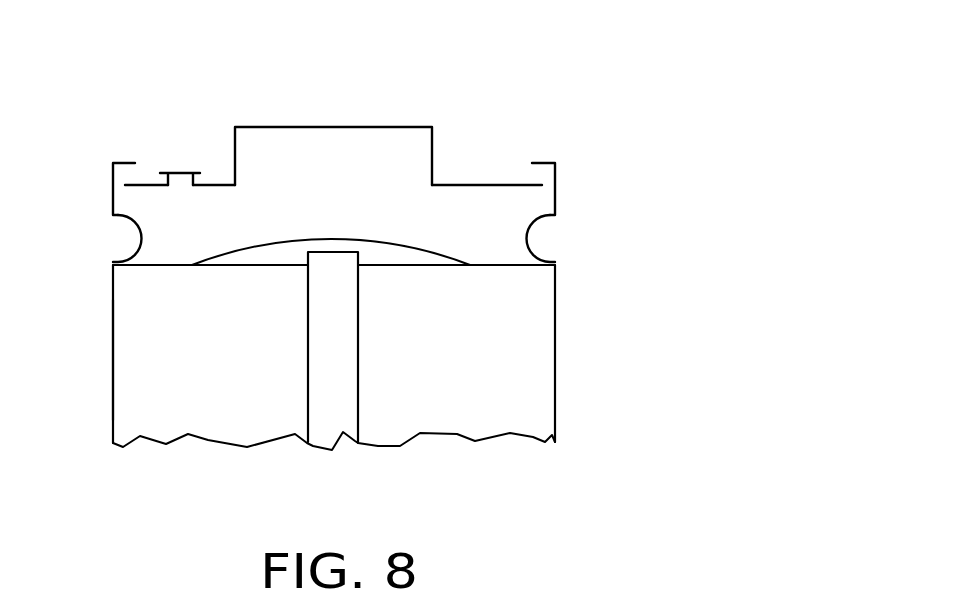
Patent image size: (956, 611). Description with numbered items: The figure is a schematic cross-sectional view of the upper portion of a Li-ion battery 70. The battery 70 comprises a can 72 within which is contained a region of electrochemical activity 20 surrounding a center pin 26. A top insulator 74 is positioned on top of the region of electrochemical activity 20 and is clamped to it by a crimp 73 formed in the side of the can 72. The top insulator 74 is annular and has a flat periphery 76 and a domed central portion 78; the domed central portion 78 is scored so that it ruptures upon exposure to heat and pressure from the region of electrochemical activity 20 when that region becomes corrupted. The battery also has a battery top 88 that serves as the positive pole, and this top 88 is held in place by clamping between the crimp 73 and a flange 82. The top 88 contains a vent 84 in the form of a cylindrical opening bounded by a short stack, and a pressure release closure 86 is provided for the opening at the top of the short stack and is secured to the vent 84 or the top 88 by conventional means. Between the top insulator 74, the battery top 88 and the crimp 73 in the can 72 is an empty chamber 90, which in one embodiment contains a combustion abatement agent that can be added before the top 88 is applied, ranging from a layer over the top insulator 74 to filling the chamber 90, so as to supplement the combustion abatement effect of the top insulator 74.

The Li-ion battery 70 is at (582, 101).
The can 72 is at (556, 355).
The region of electrochemical activity 20 is at (247, 380).
The center pin 26 is at (350, 380).
The top insulator 74 is at (162, 280).
The flat periphery 76 is at (141, 241).
The crimp 73 is at (538, 251).
The domed central portion 78 is at (340, 240).
The empty chamber 90 is at (422, 222).
The flange 82 is at (132, 161).
The battery top 88 is at (433, 143).
The vent 84 is at (180, 188).
The pressure release closure 86 is at (180, 172).